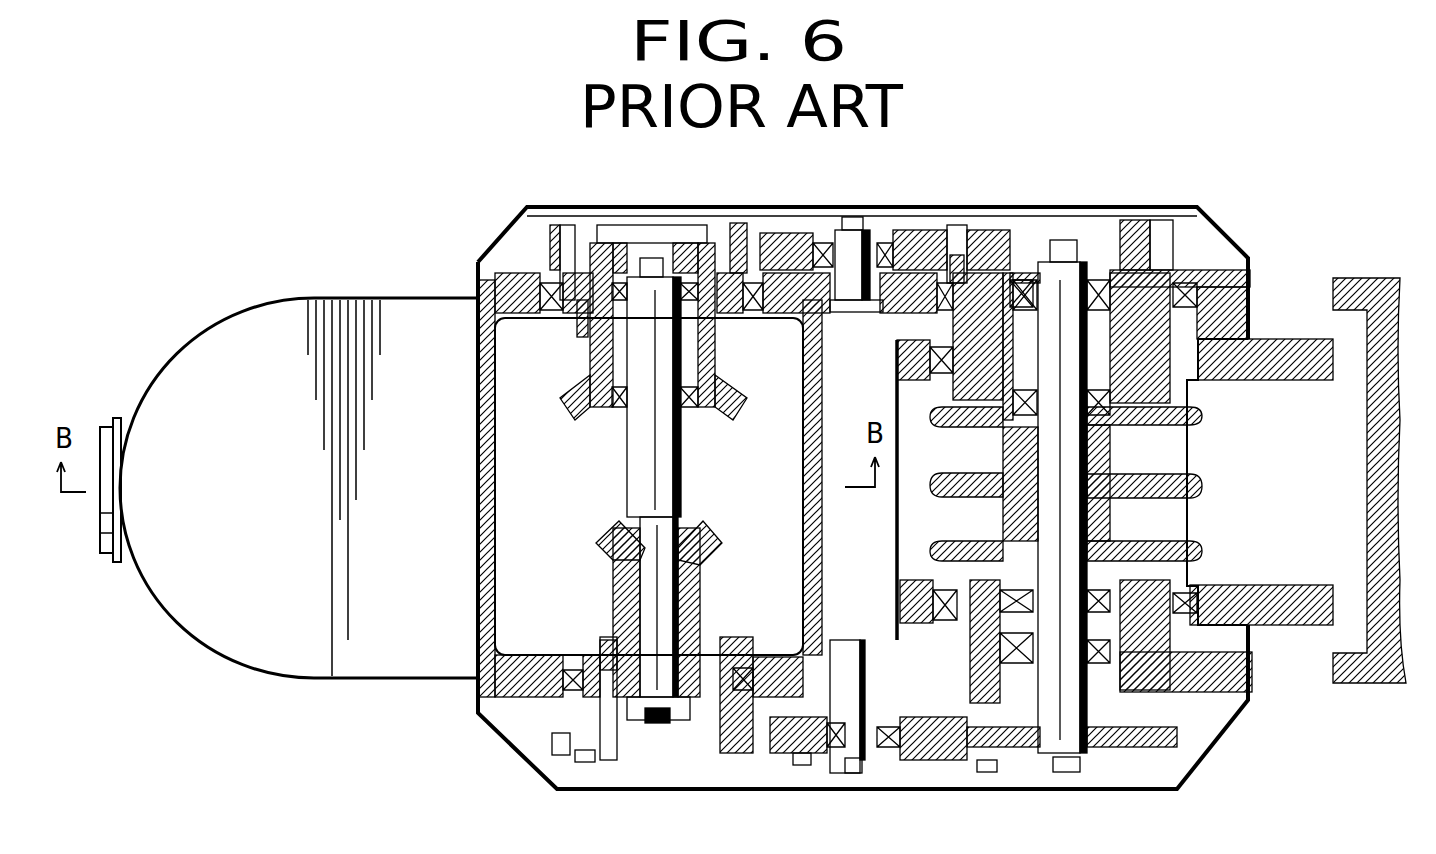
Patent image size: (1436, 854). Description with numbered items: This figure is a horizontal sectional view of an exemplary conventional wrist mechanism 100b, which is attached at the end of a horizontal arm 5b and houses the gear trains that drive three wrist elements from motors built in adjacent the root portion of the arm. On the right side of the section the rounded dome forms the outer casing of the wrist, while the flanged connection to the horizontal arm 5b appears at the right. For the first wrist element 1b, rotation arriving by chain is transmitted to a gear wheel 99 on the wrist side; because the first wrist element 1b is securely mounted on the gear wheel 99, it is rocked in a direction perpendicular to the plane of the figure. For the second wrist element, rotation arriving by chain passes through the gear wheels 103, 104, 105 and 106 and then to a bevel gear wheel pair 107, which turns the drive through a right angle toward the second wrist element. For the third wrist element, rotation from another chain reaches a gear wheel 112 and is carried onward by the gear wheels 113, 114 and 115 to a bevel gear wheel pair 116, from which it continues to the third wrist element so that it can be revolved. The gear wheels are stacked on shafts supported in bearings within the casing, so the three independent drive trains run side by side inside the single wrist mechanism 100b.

The wrist mechanism 100b is at (405, 258).
The gear wheel 106 is at (700, 245).
The gear wheel 105 is at (935, 233).
The gear wheel 104 is at (1107, 245).
The horizontal arm 5b is at (1298, 338).
The bevel gear wheel pair 107 is at (587, 382).
The gear wheel 103 is at (1170, 425).
The gear wheel 112 is at (1170, 476).
The gear wheel 99 is at (1170, 542).
The bevel gear wheel pair 116 is at (612, 553).
The first wrist element 1b is at (900, 648).
The gear wheel 115 is at (738, 756).
The gear wheel 114 is at (780, 756).
The gear wheel 113 is at (1115, 752).